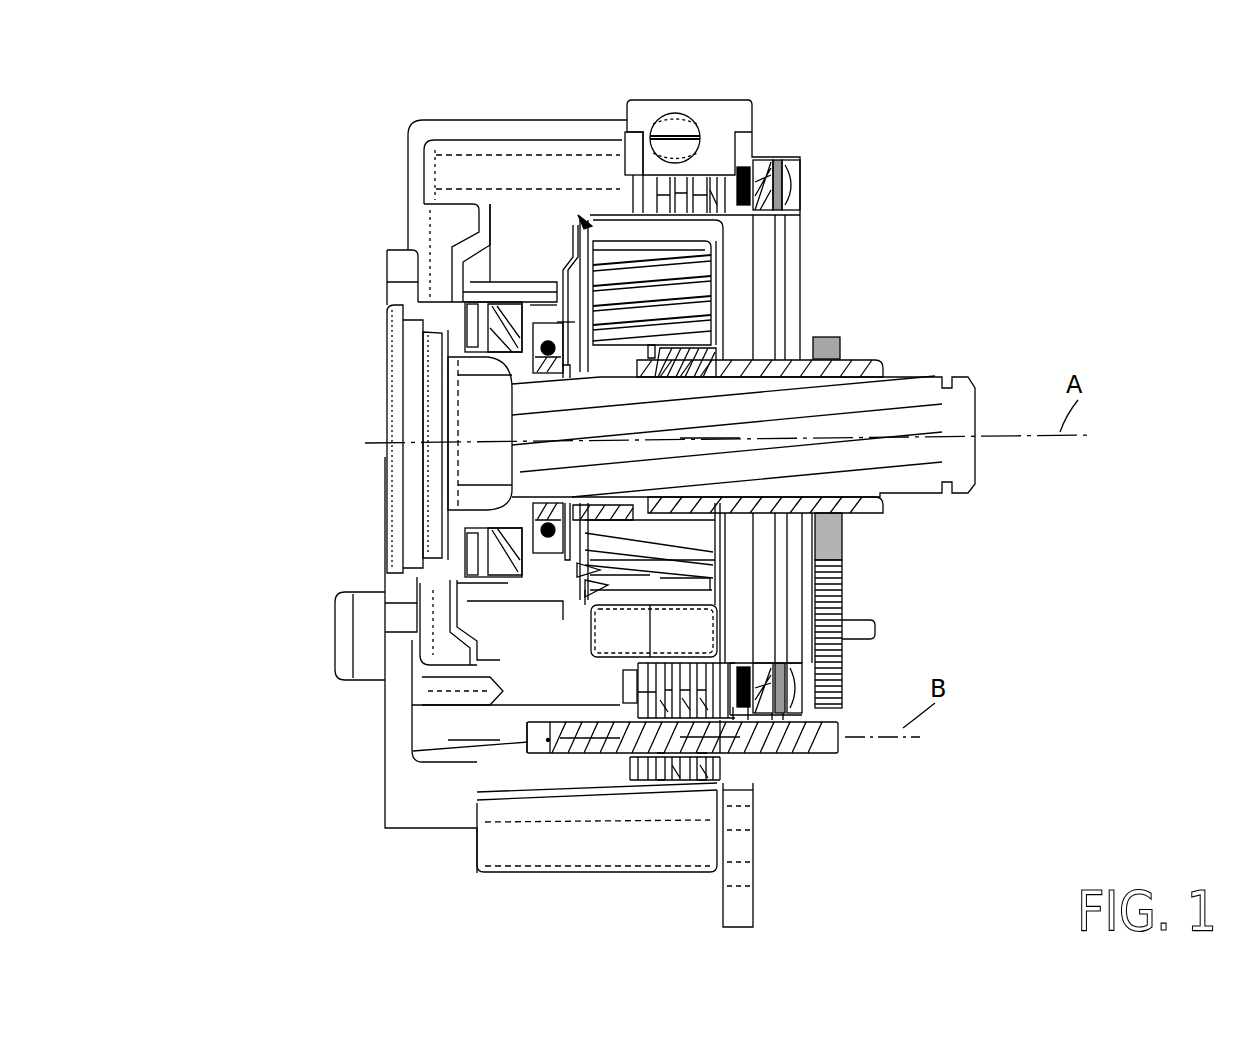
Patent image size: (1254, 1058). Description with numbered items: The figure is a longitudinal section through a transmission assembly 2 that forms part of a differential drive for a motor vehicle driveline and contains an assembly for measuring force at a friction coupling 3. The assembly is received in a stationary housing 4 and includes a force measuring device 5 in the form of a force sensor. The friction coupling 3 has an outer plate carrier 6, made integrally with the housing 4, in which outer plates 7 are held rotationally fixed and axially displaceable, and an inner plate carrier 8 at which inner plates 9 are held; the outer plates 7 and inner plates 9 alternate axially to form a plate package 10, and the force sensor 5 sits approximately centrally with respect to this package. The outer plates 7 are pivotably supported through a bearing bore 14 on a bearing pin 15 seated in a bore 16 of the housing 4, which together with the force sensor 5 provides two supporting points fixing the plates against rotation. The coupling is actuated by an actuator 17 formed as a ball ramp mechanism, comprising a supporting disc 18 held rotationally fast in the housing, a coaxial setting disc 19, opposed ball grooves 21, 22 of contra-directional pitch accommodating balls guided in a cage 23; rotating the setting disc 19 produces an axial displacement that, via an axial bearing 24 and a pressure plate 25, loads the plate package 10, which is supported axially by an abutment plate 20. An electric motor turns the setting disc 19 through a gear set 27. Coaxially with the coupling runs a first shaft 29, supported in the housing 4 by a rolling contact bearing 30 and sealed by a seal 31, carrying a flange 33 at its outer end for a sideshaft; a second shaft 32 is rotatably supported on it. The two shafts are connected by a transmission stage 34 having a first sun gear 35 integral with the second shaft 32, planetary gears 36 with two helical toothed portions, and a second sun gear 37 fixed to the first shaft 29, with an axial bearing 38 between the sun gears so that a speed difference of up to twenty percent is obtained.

The transmission assembly 2 is at (203, 239).
The friction coupling 3 is at (706, 172).
The housing 4 is at (432, 130).
The force measuring device 5 is at (683, 130).
The outer plate carrier 6 is at (640, 793).
The outer plates 7 is at (663, 763).
The inner plate carrier 8 is at (685, 222).
The inner plates 9 is at (648, 190).
The plate package 10 is at (690, 298).
The bearing bore 14 is at (628, 740).
The bearing pin 15 is at (838, 746).
The bore 16 is at (537, 760).
The actuator 17 is at (806, 157).
The supporting disc 18 is at (800, 205).
The setting disc 19 is at (800, 172).
The abutment plate 20 is at (631, 141).
The ball grooves 21 is at (790, 682).
The ball grooves 22 is at (768, 690).
The cage 23 is at (775, 742).
The axial bearing 24 is at (742, 712).
The pressure plate 25 is at (733, 718).
The gear set 27 is at (844, 590).
The first shaft 29 is at (920, 400).
The rolling contact bearing 30 is at (550, 550).
The seal 31 is at (484, 328).
The second shaft 32 is at (780, 372).
The flange 33 is at (395, 257).
The transmission stage 34 is at (583, 218).
The first sun gear 35 is at (700, 357).
The planetary gears 36 is at (690, 262).
The second sun gear 37 is at (625, 528).
The axial bearing 38 is at (650, 533).